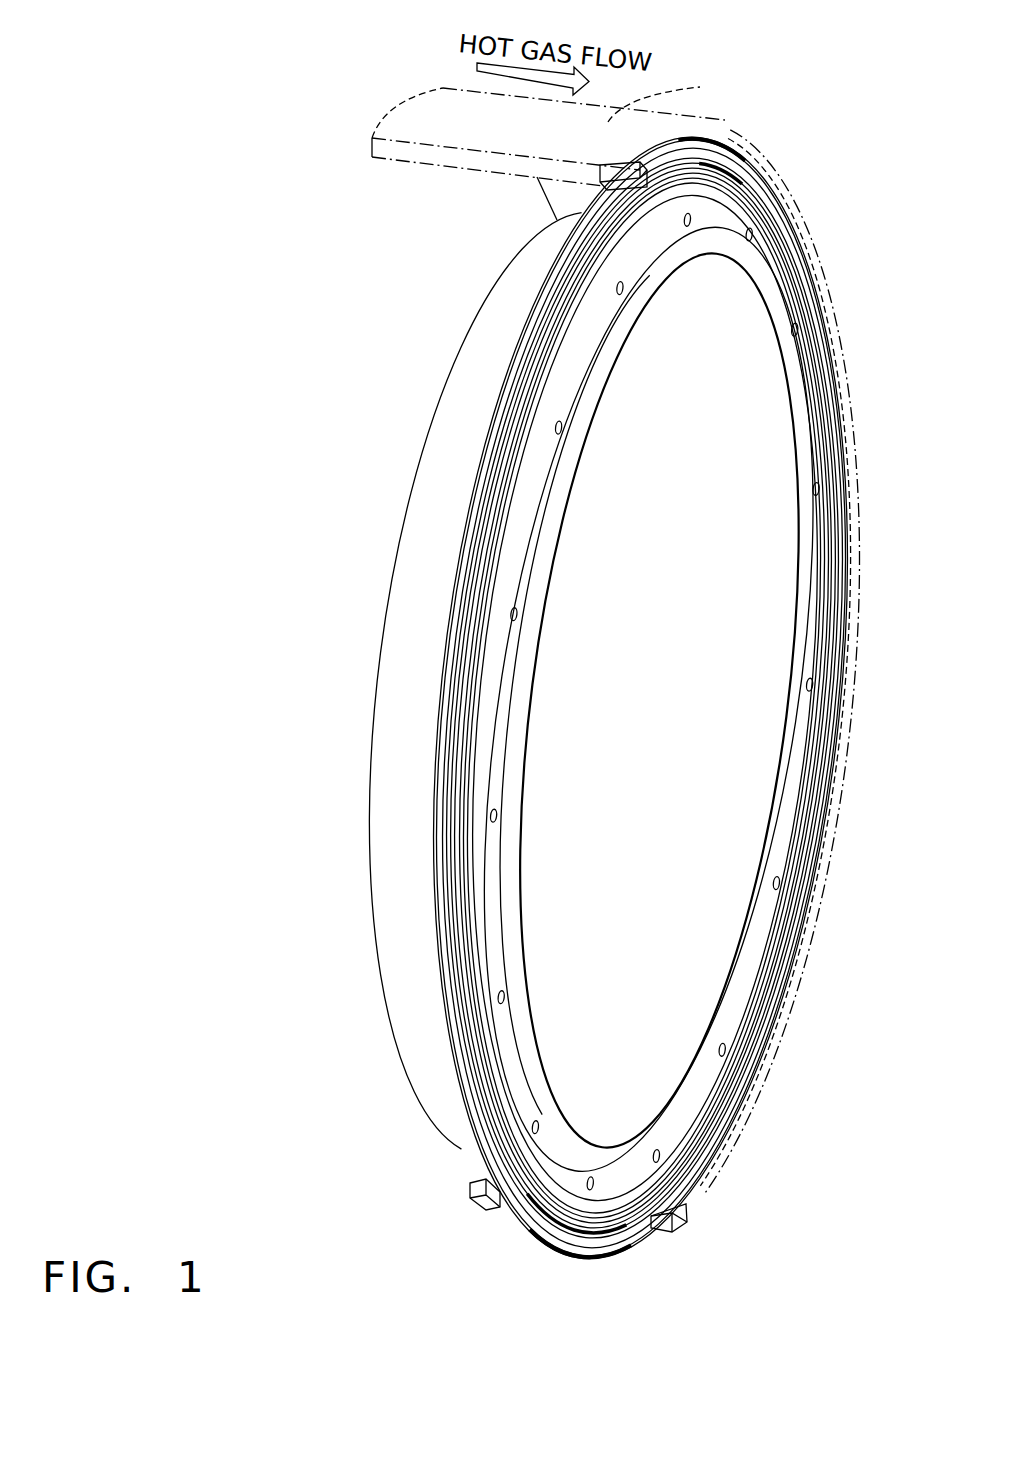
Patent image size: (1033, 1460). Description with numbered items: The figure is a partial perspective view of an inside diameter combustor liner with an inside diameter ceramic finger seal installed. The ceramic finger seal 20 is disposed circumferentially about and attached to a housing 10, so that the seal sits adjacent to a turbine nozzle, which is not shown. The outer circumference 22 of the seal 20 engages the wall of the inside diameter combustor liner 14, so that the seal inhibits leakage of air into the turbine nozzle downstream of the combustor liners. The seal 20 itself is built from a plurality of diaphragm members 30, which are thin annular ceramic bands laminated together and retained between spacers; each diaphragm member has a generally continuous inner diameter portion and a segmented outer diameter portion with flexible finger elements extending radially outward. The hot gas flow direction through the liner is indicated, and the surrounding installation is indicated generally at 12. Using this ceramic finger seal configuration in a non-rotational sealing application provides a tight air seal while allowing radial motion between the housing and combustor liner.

The housing 10 is at (416, 569).
The housing outline 12 is at (728, 78).
The inside diameter combustor liner 14 is at (457, 117).
The ceramic finger seal 20 is at (762, 207).
The outer circumference 22 is at (637, 182).
The diaphragm members 30 is at (750, 233).